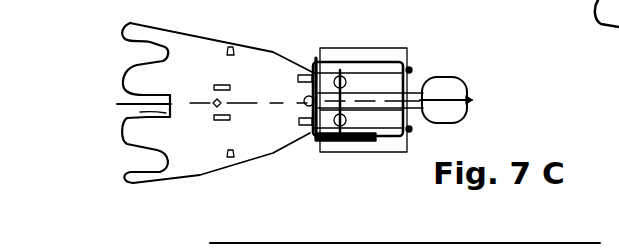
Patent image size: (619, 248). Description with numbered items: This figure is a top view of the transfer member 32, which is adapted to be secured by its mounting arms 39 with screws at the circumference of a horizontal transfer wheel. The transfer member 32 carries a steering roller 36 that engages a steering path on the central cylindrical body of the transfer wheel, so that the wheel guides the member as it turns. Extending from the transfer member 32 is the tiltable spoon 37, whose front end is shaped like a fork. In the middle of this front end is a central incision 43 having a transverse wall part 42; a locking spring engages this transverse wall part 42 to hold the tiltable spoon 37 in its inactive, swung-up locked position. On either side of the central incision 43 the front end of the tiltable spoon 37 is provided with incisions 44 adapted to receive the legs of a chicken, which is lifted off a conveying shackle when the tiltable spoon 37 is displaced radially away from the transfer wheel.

The transfer member 32 is at (302, 150).
The steering roller 36 is at (443, 83).
The tiltable spoon 37 is at (192, 153).
The mounting arms 39 is at (387, 53).
The transverse wall part 42 is at (117, 104).
The central incision 43 is at (140, 112).
The incisions 44 is at (143, 48).